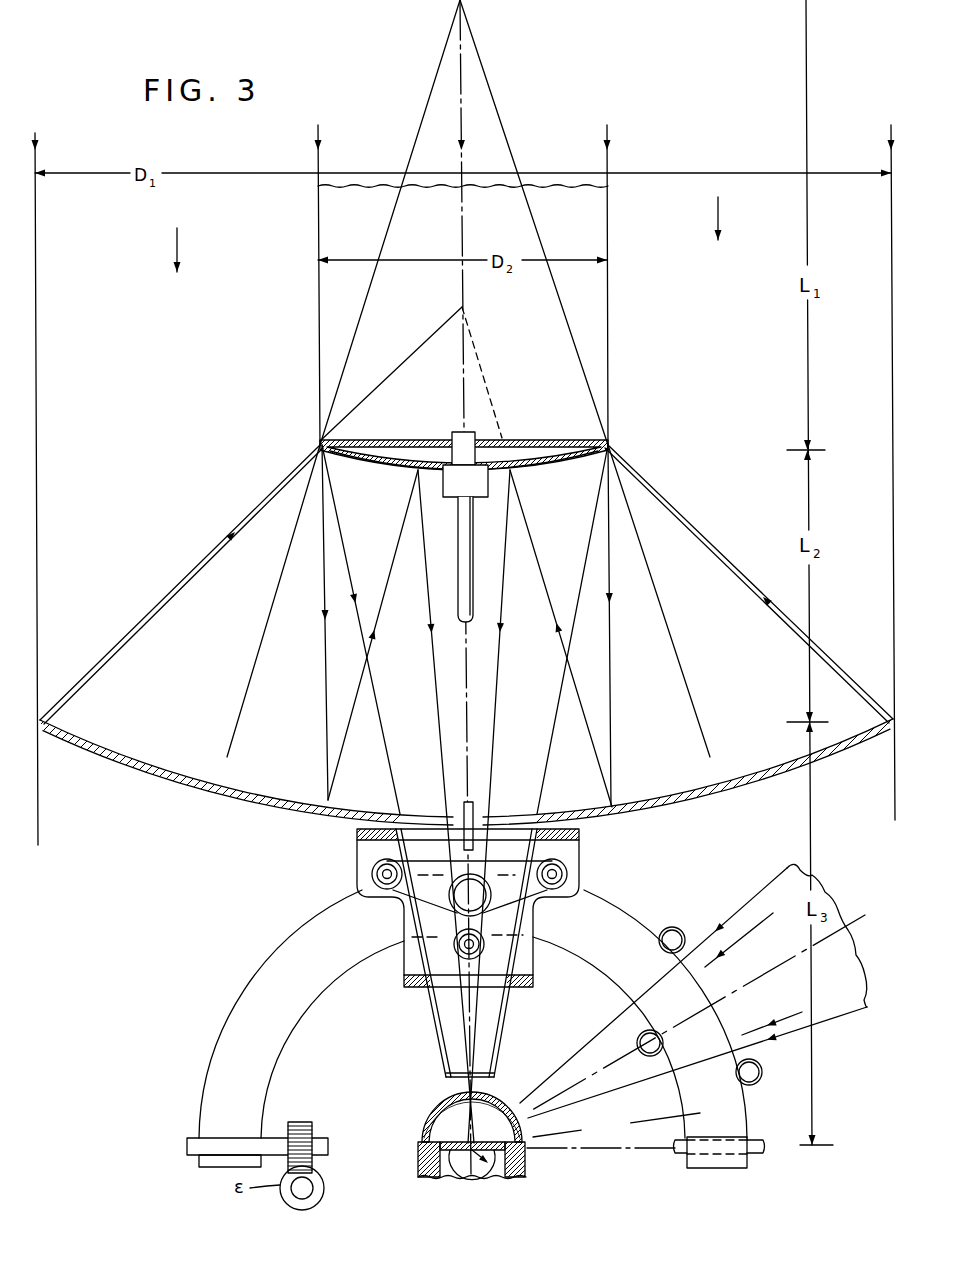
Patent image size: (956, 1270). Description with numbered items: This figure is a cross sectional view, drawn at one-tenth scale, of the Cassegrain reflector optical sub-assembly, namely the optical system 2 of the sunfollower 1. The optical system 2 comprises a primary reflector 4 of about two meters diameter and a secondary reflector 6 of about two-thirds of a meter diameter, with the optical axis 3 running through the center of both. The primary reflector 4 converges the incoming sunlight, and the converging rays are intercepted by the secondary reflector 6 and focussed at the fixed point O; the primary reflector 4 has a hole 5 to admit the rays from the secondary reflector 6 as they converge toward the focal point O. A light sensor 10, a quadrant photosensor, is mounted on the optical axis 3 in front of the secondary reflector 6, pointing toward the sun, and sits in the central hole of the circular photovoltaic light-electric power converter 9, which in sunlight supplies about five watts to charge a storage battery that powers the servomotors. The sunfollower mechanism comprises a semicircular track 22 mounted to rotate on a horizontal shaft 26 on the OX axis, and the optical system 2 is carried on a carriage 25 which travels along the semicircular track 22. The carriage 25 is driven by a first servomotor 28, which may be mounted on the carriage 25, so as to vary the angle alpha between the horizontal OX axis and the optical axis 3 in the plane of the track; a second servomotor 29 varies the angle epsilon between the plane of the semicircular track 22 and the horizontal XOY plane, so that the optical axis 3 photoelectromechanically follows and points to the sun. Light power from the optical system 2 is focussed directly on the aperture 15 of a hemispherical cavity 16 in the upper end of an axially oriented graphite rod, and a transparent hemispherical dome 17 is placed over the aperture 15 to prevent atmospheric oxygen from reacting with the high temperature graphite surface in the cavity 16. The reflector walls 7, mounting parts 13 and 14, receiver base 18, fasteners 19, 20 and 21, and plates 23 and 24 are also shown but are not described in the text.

The sunfollower 1 is at (701, 613).
The optical system 2 is at (657, 525).
The optical axis 3 is at (464, 289).
The primary reflector 4 is at (647, 802).
The hole 5 is at (505, 817).
The secondary reflector 6 is at (532, 470).
The reflective surface 7 is at (714, 543).
The photovoltaic light-electric power converter 9 is at (527, 442).
The light sensor 10 is at (471, 441).
The mounting block 13 is at (481, 497).
The rod 14 is at (470, 593).
The aperture 15 is at (436, 1128).
The hemispherical cavity 16 is at (425, 1154).
The transparent hemispherical dome 17 is at (503, 1108).
The receiver base 18 is at (525, 1165).
The bolt 19 is at (372, 875).
The bolt 20 is at (567, 874).
The bolt 21 is at (480, 952).
The semicircular track 22 is at (612, 915).
The top plate 23 is at (582, 836).
The bottom plate 24 is at (533, 980).
The carriage 25 is at (404, 925).
The horizontal shaft 26 is at (268, 1142).
The first servomotor 28 is at (462, 917).
The second servomotor 29 is at (325, 1190).